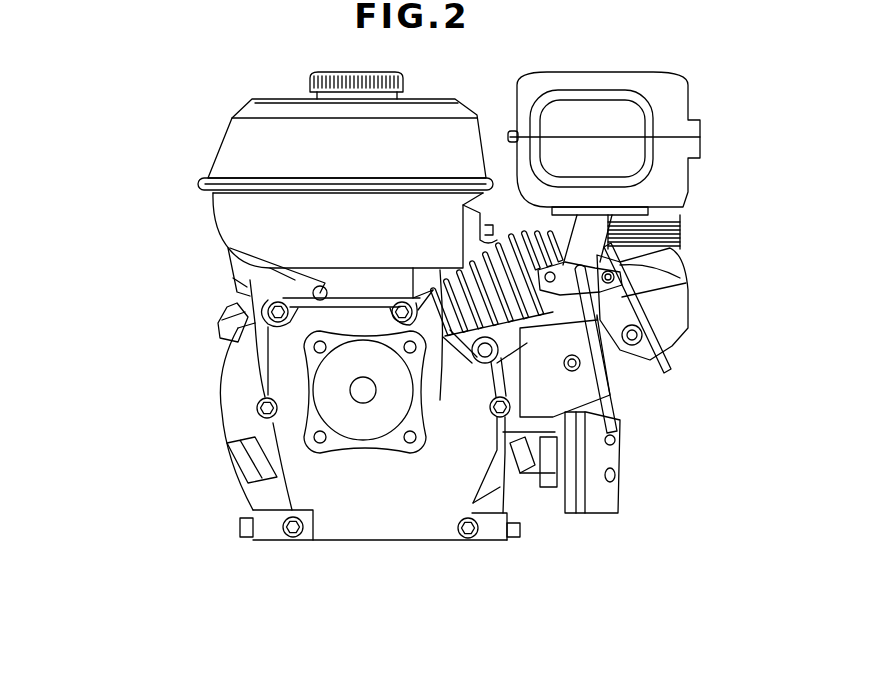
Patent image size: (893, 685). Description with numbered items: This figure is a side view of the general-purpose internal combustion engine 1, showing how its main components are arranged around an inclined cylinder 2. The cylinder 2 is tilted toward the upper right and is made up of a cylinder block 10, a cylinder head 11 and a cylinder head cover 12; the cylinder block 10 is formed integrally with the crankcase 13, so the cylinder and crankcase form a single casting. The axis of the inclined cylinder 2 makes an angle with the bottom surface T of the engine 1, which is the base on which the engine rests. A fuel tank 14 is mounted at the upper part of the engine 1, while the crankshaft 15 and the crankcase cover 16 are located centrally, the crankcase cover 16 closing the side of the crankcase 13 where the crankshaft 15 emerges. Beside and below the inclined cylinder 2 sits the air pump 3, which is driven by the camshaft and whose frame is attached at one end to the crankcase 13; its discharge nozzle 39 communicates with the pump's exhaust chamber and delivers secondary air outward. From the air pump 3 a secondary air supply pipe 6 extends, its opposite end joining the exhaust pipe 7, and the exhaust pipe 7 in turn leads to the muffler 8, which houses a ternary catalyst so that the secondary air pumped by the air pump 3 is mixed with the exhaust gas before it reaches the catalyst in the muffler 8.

The general-purpose internal combustion engine 1 is at (143, 195).
The cylinder 2 is at (677, 370).
The air pump 3 is at (602, 515).
The secondary air supply pipe 6 is at (642, 277).
The exhaust pipe 7 is at (680, 222).
The muffler 8 is at (690, 107).
The cylinder block 10 is at (505, 236).
The cylinder head 11 is at (647, 362).
The cylinder head cover 12 is at (690, 310).
The crankcase 13 is at (233, 377).
The fuel tank 14 is at (253, 120).
The crankshaft 15 is at (363, 403).
The crankcase cover 16 is at (457, 453).
The discharge nozzle 39 is at (615, 447).
The bottom surface T is at (325, 540).